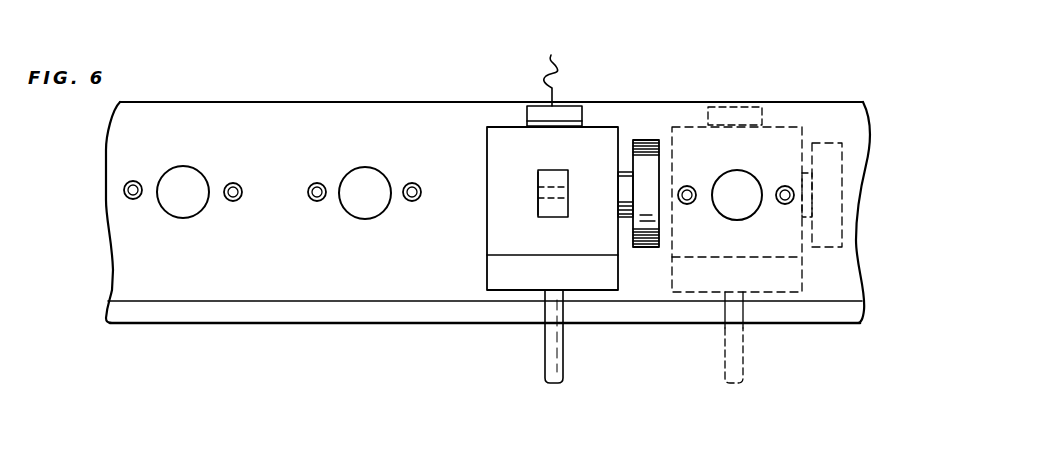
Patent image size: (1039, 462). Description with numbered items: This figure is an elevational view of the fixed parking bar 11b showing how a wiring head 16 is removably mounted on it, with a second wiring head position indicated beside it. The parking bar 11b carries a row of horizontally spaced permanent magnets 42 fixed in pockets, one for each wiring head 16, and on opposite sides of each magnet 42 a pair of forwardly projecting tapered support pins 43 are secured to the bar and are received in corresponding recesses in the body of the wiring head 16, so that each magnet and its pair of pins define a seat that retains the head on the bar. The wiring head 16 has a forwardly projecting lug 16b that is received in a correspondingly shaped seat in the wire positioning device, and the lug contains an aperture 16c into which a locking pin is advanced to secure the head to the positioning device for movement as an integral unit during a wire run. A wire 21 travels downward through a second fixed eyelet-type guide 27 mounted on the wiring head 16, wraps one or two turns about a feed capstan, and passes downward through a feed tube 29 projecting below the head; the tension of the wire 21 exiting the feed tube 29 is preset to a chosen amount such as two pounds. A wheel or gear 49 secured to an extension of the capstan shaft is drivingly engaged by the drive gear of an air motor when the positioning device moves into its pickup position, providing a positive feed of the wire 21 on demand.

The fixed parking bar 11b is at (318, 108).
The wiring head 16 is at (485, 118).
The forwardly projecting lug 16b is at (537, 180).
The aperture 16c is at (550, 178).
The wire 21 is at (555, 90).
The second fixed eyelet-type guide 27 is at (538, 108).
The feed tube 29 is at (552, 347).
The permanent magnet 42 is at (182, 166).
The tapered support pin 43 is at (133, 181).
The gear 49 is at (641, 140).